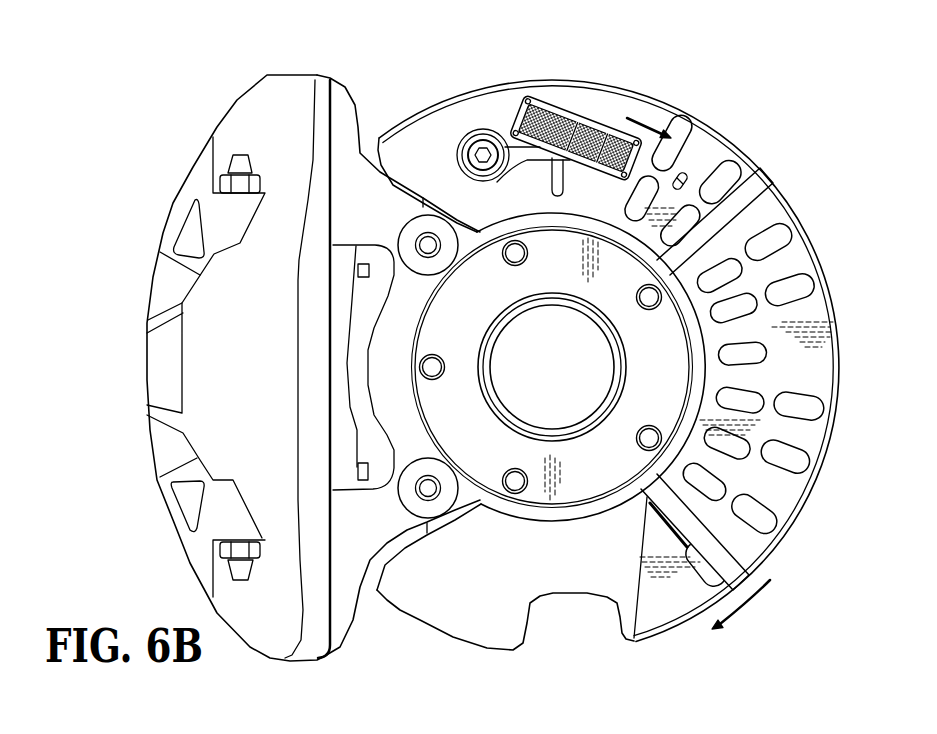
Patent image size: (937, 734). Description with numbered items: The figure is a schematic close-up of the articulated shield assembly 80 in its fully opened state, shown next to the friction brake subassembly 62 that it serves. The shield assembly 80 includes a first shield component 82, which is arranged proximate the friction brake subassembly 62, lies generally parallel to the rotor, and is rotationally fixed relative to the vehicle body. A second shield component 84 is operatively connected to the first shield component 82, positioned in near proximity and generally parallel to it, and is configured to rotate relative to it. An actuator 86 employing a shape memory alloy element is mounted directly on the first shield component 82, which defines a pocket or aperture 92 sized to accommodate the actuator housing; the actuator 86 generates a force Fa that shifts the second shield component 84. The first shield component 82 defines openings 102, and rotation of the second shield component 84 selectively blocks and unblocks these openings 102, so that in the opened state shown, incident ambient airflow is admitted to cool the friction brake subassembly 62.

The friction brake subassembly 62 is at (373, 627).
The shield assembly 80 is at (658, 360).
The first shield component 82 is at (830, 442).
The second shield component 84 is at (783, 492).
The actuator 86 is at (588, 102).
The aperture 92 is at (510, 152).
The opening 102 is at (677, 128).
The force Fa is at (637, 120).